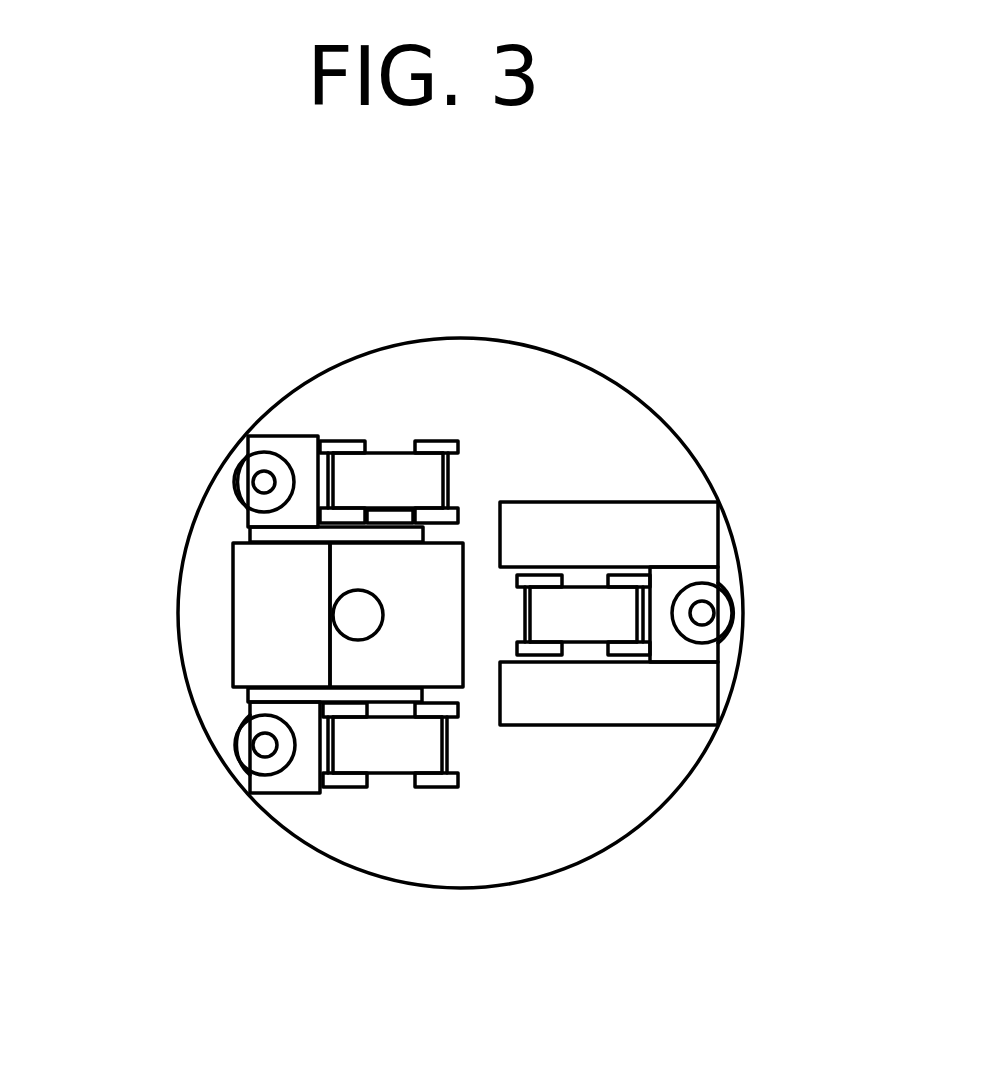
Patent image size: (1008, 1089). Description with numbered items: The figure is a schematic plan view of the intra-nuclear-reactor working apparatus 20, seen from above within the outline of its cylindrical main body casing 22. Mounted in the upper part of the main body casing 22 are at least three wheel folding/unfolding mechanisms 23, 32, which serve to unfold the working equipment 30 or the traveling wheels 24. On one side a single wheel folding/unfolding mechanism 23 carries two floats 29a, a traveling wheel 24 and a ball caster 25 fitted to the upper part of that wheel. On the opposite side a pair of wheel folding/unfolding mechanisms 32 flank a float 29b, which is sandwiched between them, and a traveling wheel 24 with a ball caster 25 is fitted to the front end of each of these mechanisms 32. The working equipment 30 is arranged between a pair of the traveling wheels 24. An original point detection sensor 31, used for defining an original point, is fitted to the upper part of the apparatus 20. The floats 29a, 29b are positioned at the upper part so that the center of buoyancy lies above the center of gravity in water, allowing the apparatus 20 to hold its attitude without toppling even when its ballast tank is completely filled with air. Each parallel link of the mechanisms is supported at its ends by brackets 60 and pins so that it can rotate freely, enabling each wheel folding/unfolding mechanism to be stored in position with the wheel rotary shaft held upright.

The intra-nuclear-reactor working apparatus 20 is at (462, 688).
The main body casing 22 is at (642, 418).
The wheel folding/unfolding mechanism 23 is at (592, 615).
The traveling wheel 24 is at (468, 603).
The ball caster 25 is at (258, 478).
The float 29a is at (665, 510).
The float 29b is at (451, 610).
The working equipment 30 is at (258, 603).
The original point detection sensor 31 is at (363, 629).
The wheel folding/unfolding mechanism 32 is at (373, 854).
The bracket 60 is at (347, 782).